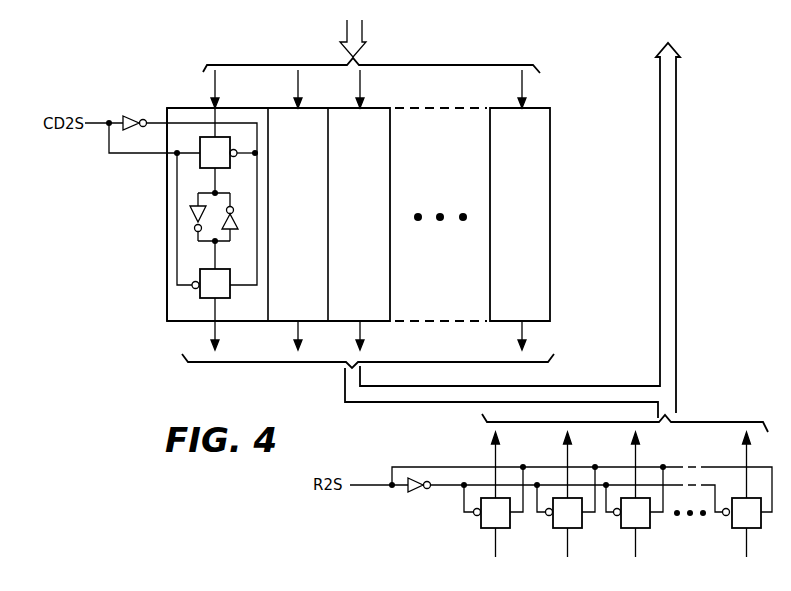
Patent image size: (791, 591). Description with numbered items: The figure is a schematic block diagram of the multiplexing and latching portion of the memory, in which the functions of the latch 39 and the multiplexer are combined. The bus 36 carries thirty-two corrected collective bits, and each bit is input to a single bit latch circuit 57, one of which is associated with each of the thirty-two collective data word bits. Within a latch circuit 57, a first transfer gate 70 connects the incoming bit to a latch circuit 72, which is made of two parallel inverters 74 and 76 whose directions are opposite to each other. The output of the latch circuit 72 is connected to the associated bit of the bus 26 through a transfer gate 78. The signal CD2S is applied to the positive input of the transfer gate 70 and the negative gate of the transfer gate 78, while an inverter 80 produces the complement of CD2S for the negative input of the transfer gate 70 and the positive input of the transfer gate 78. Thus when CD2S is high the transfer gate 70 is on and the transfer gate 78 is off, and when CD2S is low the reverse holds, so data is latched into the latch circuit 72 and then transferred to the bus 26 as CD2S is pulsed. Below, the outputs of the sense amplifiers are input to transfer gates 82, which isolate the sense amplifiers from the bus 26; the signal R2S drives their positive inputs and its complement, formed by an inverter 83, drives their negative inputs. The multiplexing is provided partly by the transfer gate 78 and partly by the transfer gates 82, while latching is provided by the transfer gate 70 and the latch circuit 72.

The bus 36 is at (362, 31).
The latch 39 is at (552, 117).
The bus 26 is at (345, 399).
The single bit latch circuit 57 is at (258, 313).
The inverter 80 is at (124, 117).
The first transfer gate 70 is at (205, 163).
The latch circuit 72 is at (217, 220).
The inverter 74 is at (191, 221).
The inverter 76 is at (240, 218).
The transfer gate 78 is at (205, 296).
The inverter 83 is at (414, 492).
The transfer gates 82 is at (484, 524).